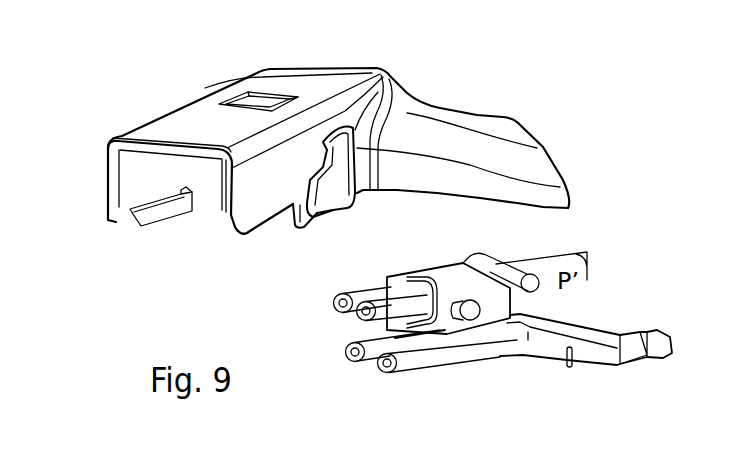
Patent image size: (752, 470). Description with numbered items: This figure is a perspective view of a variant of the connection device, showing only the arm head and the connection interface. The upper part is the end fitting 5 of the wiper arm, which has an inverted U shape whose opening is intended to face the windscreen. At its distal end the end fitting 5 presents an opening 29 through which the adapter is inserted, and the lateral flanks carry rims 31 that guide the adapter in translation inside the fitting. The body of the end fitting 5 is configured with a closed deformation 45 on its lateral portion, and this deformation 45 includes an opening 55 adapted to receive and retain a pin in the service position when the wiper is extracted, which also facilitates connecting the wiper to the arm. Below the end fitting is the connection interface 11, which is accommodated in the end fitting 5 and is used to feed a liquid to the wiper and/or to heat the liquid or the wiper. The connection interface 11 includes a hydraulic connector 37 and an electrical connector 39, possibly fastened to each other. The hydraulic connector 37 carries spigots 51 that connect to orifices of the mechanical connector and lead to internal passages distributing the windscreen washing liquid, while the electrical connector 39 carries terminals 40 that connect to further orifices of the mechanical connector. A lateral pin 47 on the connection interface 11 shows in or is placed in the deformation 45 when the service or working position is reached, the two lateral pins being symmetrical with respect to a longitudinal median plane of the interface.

The end fitting 5 is at (202, 113).
The opening 29 is at (268, 106).
The rims 31 is at (268, 234).
The deformation 45 is at (345, 180).
The opening 55 is at (331, 205).
The electrical connector 39 is at (430, 267).
The terminals 40 is at (353, 313).
The pin 47 is at (479, 313).
The spigots 51 is at (403, 372).
The hydraulic connector 37 is at (437, 370).
The connection interface 11 is at (477, 353).